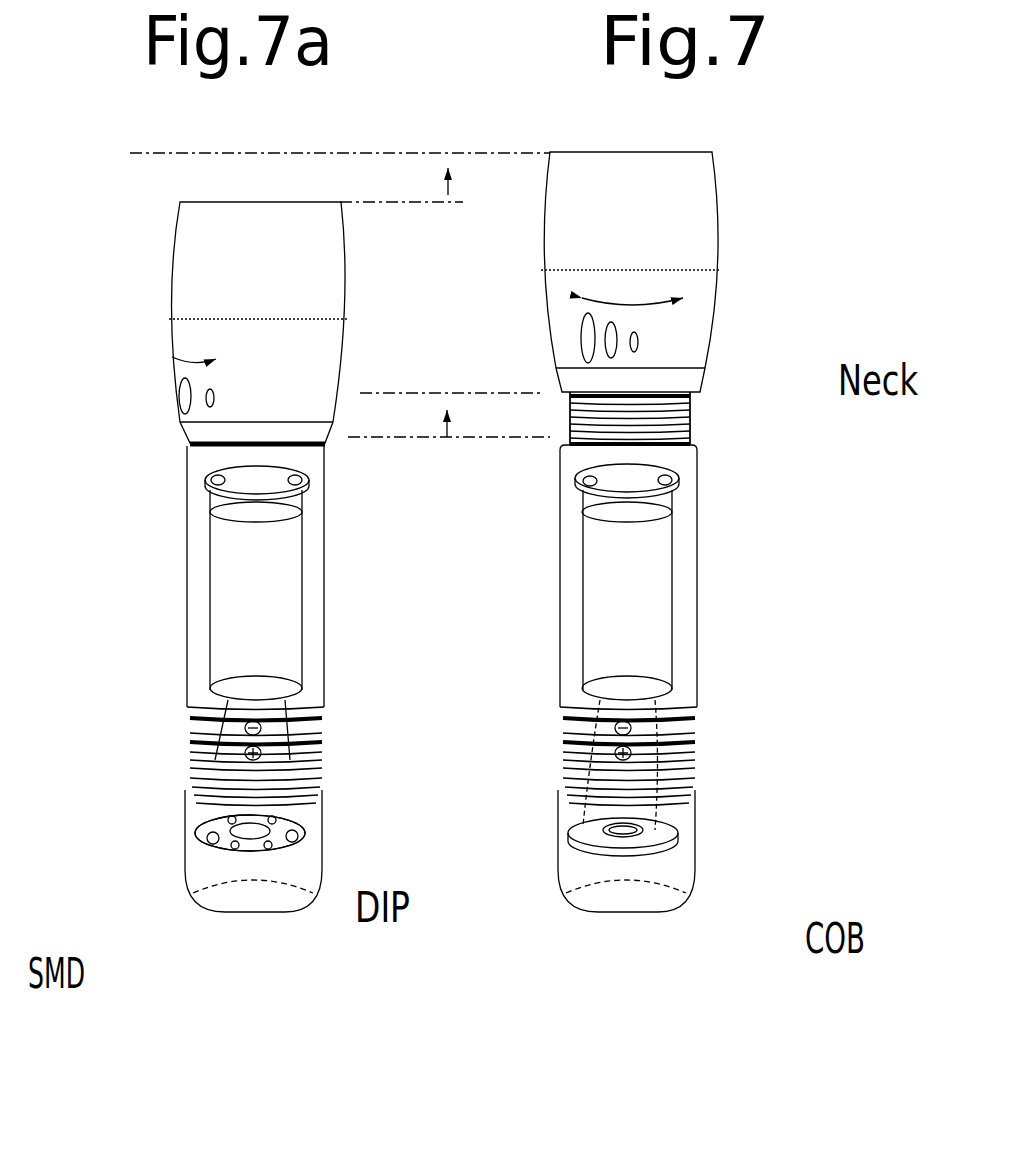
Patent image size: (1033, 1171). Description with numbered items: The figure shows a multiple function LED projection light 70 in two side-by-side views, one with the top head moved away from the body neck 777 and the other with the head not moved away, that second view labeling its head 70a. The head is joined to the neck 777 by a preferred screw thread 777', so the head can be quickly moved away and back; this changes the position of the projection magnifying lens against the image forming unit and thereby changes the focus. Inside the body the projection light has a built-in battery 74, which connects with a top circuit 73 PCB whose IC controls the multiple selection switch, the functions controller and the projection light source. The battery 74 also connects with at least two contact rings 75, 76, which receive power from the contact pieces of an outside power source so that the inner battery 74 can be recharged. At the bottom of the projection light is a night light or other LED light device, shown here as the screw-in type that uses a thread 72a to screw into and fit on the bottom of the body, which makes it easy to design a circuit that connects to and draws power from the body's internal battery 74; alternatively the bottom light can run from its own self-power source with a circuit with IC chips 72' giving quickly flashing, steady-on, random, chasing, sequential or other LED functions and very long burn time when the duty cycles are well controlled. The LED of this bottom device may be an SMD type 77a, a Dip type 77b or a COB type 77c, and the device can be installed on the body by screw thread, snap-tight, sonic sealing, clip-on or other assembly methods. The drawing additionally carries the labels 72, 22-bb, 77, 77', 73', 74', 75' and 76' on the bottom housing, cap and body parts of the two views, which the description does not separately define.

In FIG. 7, the multiple function LED projection light 70 is at (625, 212).
In FIG. 7A, the zoom head (alternate) 70a is at (205, 265).
In FIG. 7, the body neck 777 is at (734, 373).
In FIG. 7, the screw thread 777' is at (747, 346).
In FIG. 7, the cap with holes 77 is at (735, 454).
In FIG. 7A, the cap with holes (alternate) 77' is at (182, 465).
In FIG. 7, the top circuit PCB 73 is at (737, 497).
In FIG. 7A, the cylinder top (alternate) 73' is at (172, 519).
In FIG. 7, the built-in battery 74 is at (735, 595).
In FIG. 7A, the cylinder body (alternate) 74' is at (167, 595).
In FIG. 7, the contact ring 75 is at (706, 691).
In FIG. 7A, the upper groove ring (alternate) 75' is at (172, 677).
In FIG. 7, the contact ring 76 is at (709, 729).
In FIG. 7A, the lower groove ring (alternate) 76' is at (166, 716).
In FIG. 7A, the screw fastened body section 22-bb is at (185, 762).
In FIG. 7, the screw fastened body section 22-bb is at (560, 756).
In FIG. 7A, the thread 72a is at (185, 785).
In FIG. 7, the thread 72a is at (695, 780).
In FIG. 7, the bottom housing 72 is at (591, 696).
In FIG. 7A, the circuit with IC chips 72' is at (292, 679).
In FIG. 7A, the SMD LED 77a is at (220, 857).
In FIG. 7A, the Dip LED 77b is at (308, 848).
In FIG. 7, the COB LED 77c is at (680, 850).